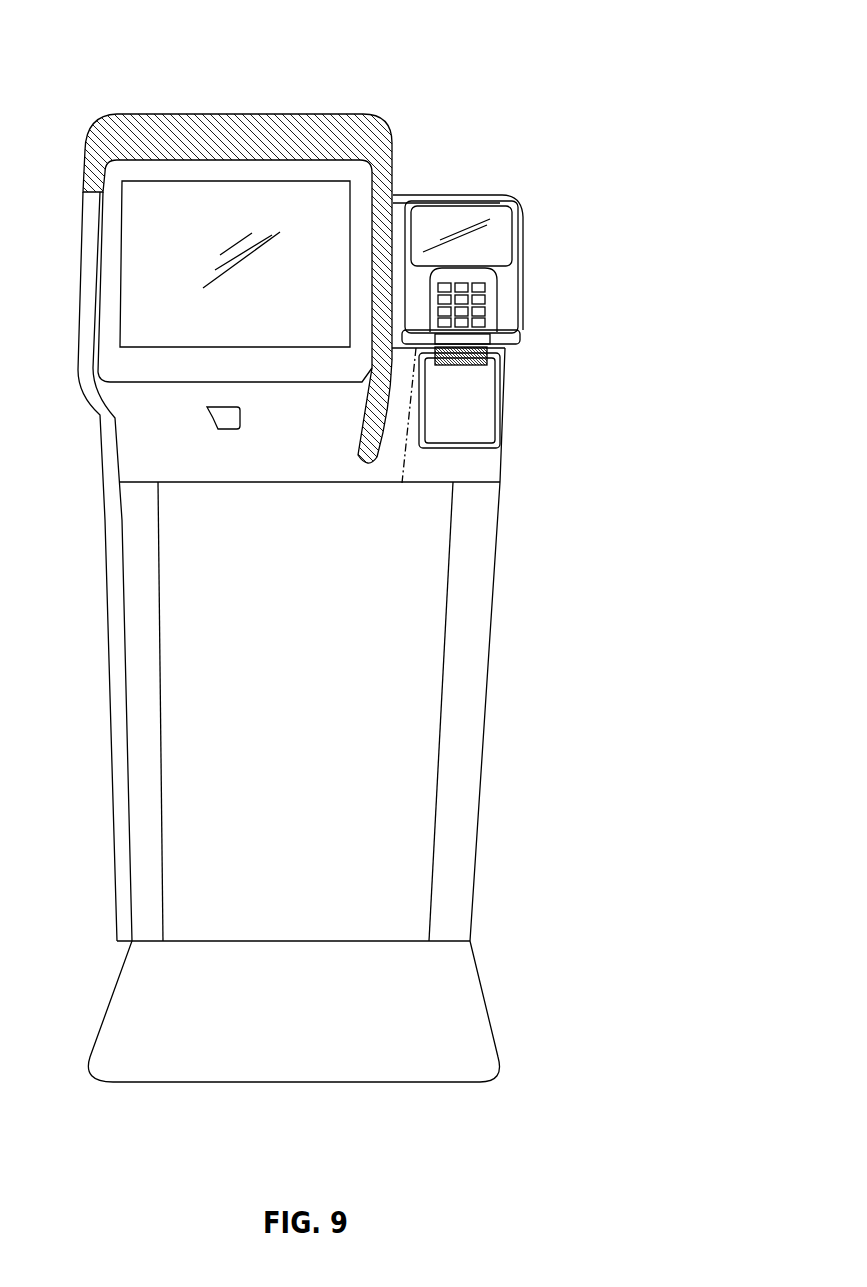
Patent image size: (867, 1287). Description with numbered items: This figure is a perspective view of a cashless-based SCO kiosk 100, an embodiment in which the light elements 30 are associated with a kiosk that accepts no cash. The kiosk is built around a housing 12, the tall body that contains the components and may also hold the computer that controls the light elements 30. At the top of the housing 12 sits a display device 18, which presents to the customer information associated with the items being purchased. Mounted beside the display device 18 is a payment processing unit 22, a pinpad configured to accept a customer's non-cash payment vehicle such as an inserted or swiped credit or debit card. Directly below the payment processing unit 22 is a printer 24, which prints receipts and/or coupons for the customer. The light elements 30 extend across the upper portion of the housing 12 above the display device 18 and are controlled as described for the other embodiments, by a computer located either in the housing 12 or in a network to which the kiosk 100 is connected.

The cashless-based SCO kiosk 100 is at (676, 37).
The housing 12 is at (321, 621).
The display device 18 is at (255, 308).
The payment processing unit 22 is at (490, 283).
The printer 24 is at (477, 408).
The light elements 30 is at (113, 112).